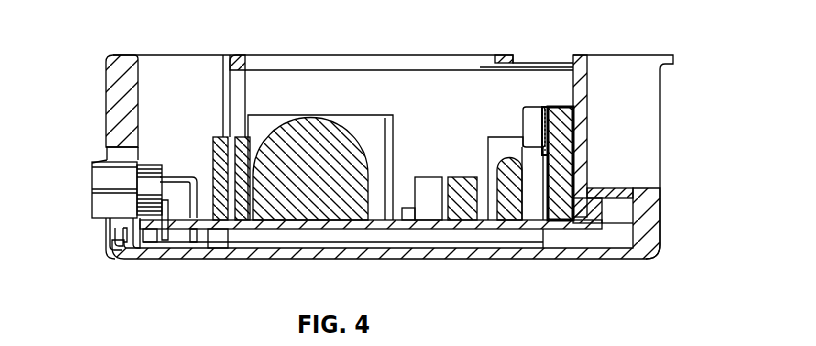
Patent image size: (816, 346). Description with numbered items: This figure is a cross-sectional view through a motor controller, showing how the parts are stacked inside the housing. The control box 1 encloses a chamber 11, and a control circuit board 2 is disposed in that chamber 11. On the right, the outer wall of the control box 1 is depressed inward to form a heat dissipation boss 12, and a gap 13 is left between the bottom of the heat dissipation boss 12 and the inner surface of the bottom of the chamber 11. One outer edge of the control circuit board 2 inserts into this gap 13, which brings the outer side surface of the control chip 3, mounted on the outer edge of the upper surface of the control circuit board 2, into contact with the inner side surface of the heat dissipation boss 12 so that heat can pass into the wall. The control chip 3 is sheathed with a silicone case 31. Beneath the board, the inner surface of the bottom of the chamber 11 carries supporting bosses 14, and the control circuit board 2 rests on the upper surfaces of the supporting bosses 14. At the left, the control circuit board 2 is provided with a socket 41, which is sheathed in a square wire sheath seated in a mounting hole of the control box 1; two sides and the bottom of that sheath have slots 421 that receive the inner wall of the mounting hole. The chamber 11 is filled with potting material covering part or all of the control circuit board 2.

The control box 1 is at (126, 105).
The chamber 11 is at (195, 77).
The heat dissipation boss 12 is at (577, 130).
The gap 13 is at (618, 235).
The supporting bosses 14 is at (560, 242).
The control circuit board 2 is at (397, 227).
The control chip 3 is at (563, 163).
The silicone case 31 is at (543, 110).
The socket 41 is at (122, 185).
The slots 421 is at (110, 237).